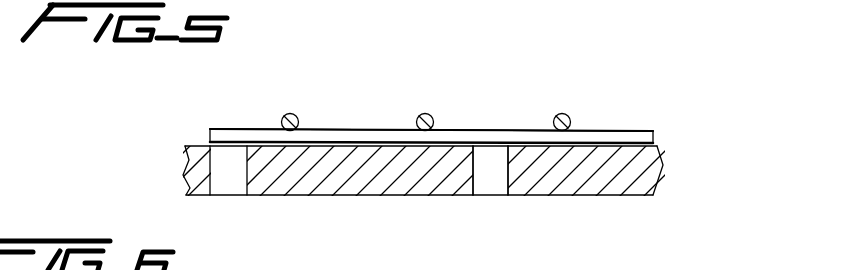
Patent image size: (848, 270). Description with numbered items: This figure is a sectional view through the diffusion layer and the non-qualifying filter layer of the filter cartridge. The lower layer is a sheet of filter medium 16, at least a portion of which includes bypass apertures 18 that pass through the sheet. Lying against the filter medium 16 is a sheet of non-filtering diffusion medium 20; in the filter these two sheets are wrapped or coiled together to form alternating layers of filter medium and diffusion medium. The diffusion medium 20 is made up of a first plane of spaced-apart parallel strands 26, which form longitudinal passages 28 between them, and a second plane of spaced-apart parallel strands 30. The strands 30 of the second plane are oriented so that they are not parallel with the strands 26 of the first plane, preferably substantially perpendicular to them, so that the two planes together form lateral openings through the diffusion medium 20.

The filter medium 16 is at (593, 218).
The bypass apertures 18 is at (485, 183).
The diffusion medium 20 is at (683, 135).
The strands 26 is at (285, 114).
The longitudinal passages 28 is at (362, 118).
The strands 30 is at (636, 140).